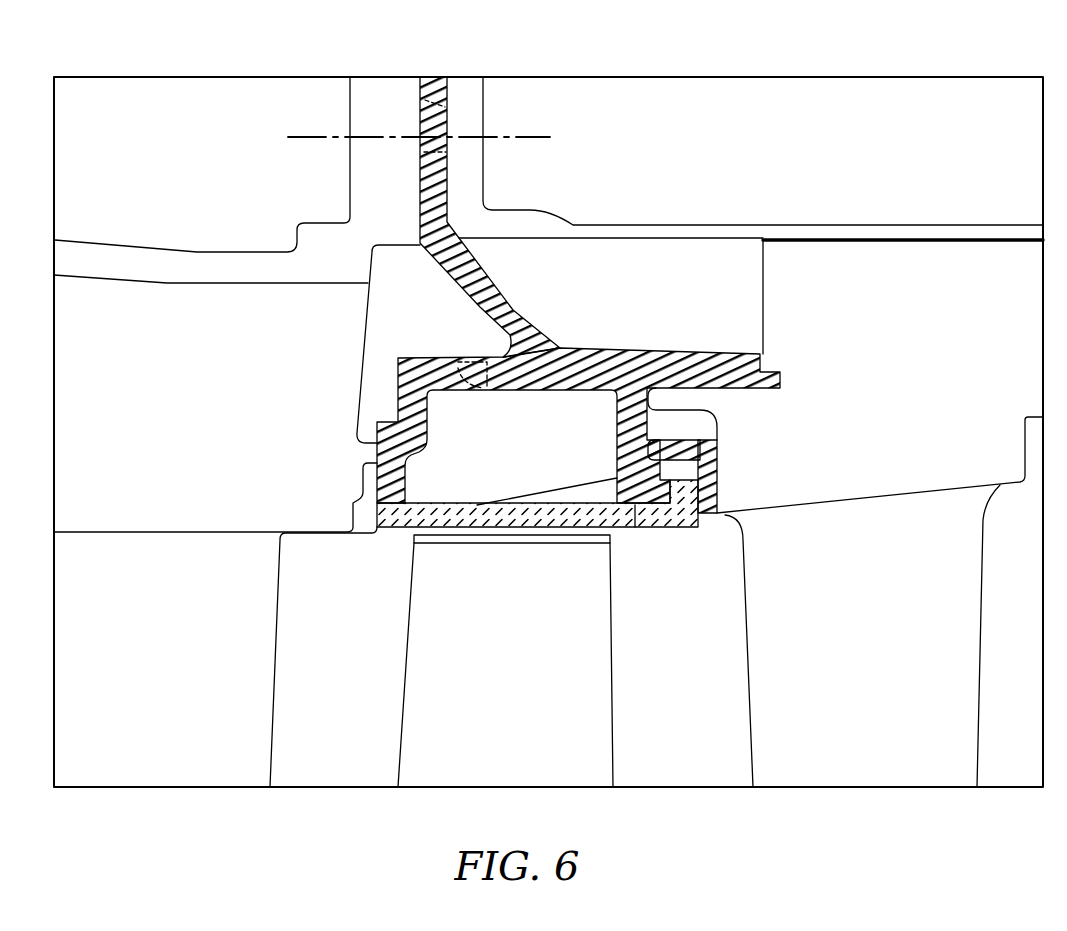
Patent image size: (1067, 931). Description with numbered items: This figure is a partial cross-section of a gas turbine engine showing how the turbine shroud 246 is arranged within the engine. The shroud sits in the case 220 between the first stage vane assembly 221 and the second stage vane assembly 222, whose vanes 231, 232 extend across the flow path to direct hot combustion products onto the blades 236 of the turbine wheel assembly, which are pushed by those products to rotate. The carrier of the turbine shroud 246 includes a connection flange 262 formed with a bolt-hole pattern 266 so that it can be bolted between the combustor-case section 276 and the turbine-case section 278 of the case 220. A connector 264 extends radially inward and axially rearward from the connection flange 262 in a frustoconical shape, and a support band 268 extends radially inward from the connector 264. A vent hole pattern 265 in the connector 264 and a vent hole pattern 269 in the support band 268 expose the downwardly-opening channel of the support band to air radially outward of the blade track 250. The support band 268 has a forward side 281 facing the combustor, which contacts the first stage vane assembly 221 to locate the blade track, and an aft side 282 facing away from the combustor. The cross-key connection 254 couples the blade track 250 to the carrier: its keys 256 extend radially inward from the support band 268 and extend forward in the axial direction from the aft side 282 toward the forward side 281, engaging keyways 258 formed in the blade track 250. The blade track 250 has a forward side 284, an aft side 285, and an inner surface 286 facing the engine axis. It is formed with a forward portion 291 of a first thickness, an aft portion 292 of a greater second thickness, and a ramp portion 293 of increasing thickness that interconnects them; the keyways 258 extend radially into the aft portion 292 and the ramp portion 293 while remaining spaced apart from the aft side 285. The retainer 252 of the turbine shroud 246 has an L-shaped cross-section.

The case 220 is at (873, 226).
The first stage vane assembly 221 is at (132, 319).
The second stage vane assembly 222 is at (914, 272).
The vane 231 is at (234, 727).
The vane 232 is at (794, 757).
The blade 236 is at (436, 766).
The turbine shroud 246 is at (573, 328).
The blade track 250 is at (645, 529).
The retainer 252 is at (722, 486).
The cross-key connection 254 is at (571, 472).
The key 256 is at (614, 497).
The keyway 258 is at (633, 510).
The connection flange 262 is at (451, 187).
The connector 264 is at (542, 318).
The vent hole pattern 265 is at (472, 284).
The bolt-hole pattern 266 is at (430, 103).
The support band 268 is at (631, 347).
The vent hole pattern 269 is at (478, 378).
The combustor-case section 276 is at (83, 272).
The turbine-case section 278 is at (995, 232).
The forward side 281 is at (375, 441).
The aft side 282 is at (706, 447).
The forward side 284 is at (375, 517).
The aft side 285 is at (706, 528).
The inner surface 286 is at (378, 550).
The forward portion 291 is at (393, 540).
The aft portion 292 is at (673, 529).
The ramp portion 293 is at (606, 486).